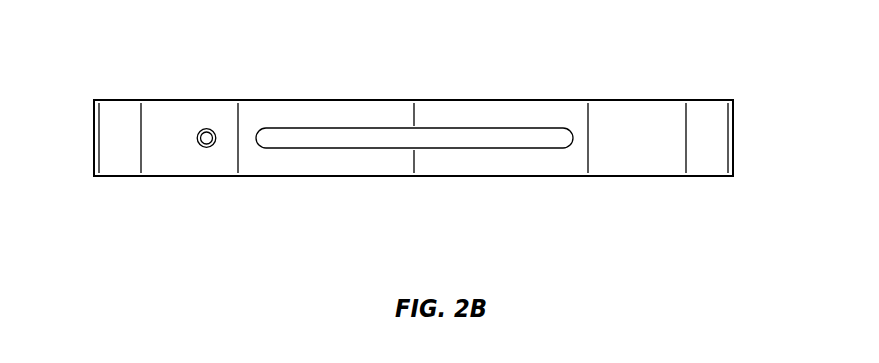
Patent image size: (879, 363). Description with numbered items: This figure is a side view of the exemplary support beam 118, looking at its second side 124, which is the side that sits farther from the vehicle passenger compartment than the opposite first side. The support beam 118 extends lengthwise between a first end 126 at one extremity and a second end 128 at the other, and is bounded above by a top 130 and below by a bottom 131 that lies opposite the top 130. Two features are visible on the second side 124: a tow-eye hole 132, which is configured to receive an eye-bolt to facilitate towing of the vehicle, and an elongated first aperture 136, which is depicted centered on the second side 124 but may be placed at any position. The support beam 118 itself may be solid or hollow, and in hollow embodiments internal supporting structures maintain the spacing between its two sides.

The support beam 118 is at (738, 69).
The second side 124 is at (566, 194).
The first end 126 is at (85, 140).
The second end 128 is at (740, 134).
The top 130 is at (505, 90).
The bottom 131 is at (494, 177).
The tow-eye hole 132 is at (207, 147).
The first aperture 136 is at (382, 143).